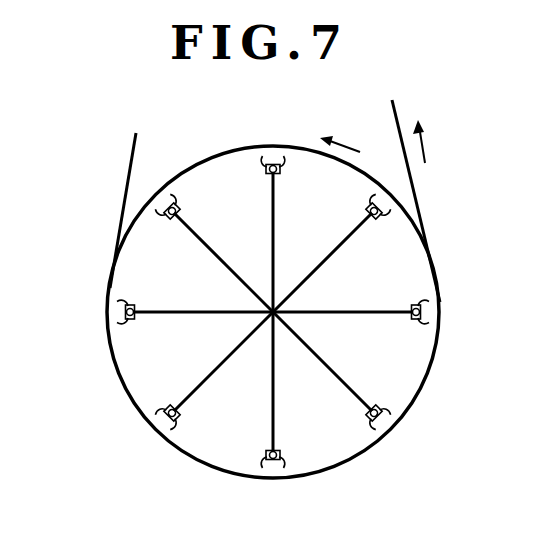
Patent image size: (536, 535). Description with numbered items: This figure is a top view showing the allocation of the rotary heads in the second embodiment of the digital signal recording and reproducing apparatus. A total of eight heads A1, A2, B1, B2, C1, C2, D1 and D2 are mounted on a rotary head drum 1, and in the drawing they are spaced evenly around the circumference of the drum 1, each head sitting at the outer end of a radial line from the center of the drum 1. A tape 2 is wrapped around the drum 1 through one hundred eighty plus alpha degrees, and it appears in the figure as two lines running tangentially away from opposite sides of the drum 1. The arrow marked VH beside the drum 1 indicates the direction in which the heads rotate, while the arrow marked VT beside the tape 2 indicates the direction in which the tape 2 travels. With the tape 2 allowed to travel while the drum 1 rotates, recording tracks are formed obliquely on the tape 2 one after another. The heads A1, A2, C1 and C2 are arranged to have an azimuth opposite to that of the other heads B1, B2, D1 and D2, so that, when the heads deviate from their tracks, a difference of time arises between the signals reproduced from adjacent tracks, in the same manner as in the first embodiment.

The rotary head drum 1 is at (431, 366).
The tape 2 is at (121, 198).
The head A1 is at (424, 302).
The head A2 is at (126, 323).
The head B1 is at (365, 426).
The head B2 is at (180, 204).
The head C1 is at (266, 463).
The head C2 is at (266, 162).
The head D1 is at (182, 424).
The head D2 is at (386, 215).
The head rotation velocity VH is at (344, 131).
The tape transport velocity VT is at (433, 143).